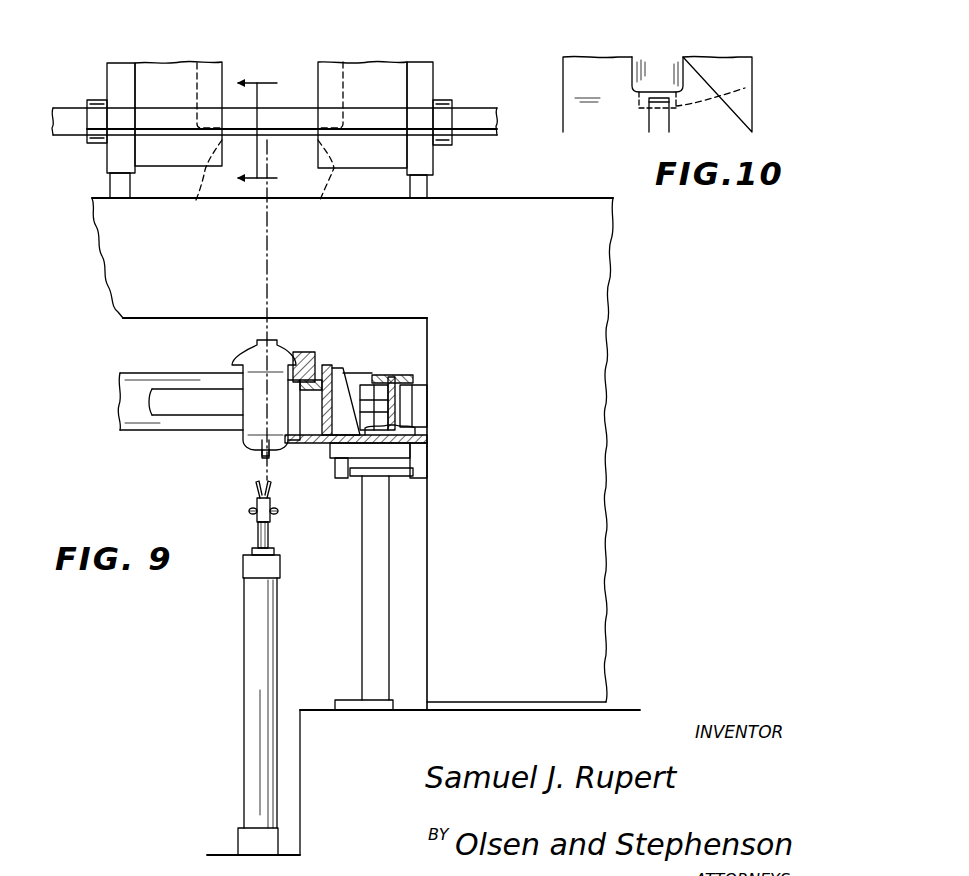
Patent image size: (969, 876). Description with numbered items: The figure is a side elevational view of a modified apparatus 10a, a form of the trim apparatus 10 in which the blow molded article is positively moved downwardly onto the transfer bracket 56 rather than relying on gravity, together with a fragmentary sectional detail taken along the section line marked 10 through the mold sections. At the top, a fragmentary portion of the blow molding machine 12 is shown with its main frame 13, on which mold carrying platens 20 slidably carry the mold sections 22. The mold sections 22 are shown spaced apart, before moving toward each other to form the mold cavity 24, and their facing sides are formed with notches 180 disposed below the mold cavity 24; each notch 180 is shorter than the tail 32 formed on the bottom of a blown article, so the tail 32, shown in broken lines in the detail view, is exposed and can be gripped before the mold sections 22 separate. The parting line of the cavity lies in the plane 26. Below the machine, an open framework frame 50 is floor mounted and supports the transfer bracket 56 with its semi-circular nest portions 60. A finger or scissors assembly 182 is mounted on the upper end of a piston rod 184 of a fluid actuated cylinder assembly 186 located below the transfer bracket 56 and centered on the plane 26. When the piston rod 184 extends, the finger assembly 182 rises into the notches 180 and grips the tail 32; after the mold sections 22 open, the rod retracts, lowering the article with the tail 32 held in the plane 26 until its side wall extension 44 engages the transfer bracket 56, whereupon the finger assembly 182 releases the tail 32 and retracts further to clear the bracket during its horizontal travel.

In FIG. 9, the trim apparatus 10 is at (242, 129).
In FIG. 9, the modified apparatus 10a is at (302, 574).
In FIG. 9, the blow molding machine 12 is at (612, 368).
In FIG. 9, the main frame 13 is at (512, 211).
In FIG. 9, the mold carrying platens 20 is at (119, 72).
In FIG. 9, the mold sections 22 is at (163, 70).
In FIG. 10, the mold sections 22 is at (735, 60).
In FIG. 9, the mold cavity 24 is at (207, 72).
In FIG. 10, the mold cavity 24 is at (648, 68).
In FIG. 9, the plane 26 is at (270, 272).
In FIG. 9, the tail 32 is at (261, 448).
In FIG. 10, the tail 32 is at (747, 88).
In FIG. 9, the outwardly flared extension 44 is at (240, 366).
In FIG. 9, the frame 50 is at (392, 565).
In FIG. 9, the transfer bracket 56 is at (348, 367).
In FIG. 9, the nest portions 60 is at (306, 357).
In FIG. 9, the notches 180 is at (258, 182).
In FIG. 10, the notches 180 is at (663, 125).
In FIG. 9, the finger or scissors assembly 182 is at (284, 500).
In FIG. 9, the piston rod 184 is at (270, 538).
In FIG. 9, the fluid actuated cylinder assembly 186 is at (246, 650).